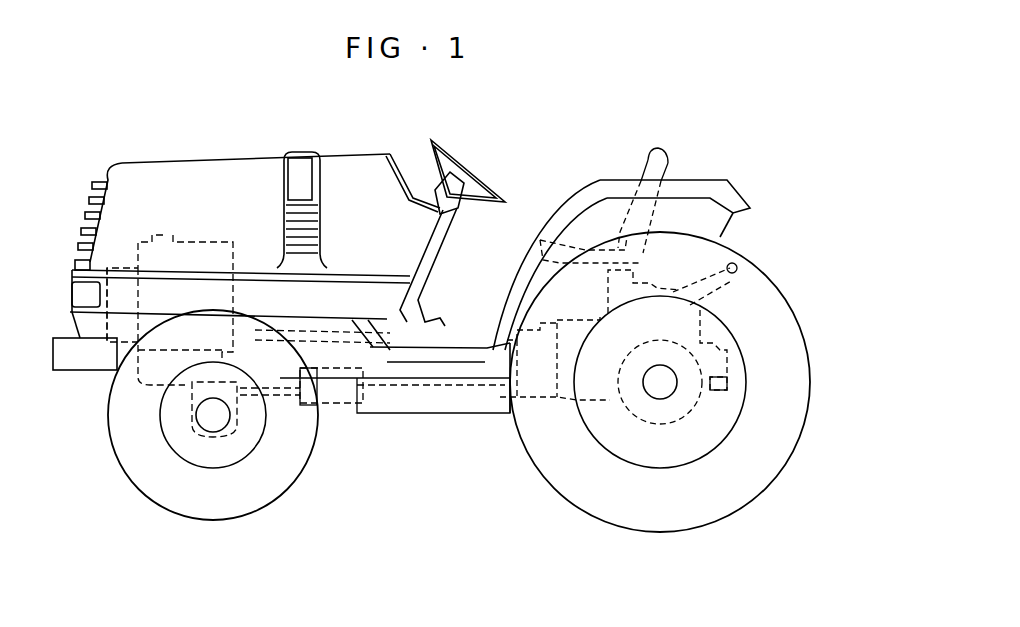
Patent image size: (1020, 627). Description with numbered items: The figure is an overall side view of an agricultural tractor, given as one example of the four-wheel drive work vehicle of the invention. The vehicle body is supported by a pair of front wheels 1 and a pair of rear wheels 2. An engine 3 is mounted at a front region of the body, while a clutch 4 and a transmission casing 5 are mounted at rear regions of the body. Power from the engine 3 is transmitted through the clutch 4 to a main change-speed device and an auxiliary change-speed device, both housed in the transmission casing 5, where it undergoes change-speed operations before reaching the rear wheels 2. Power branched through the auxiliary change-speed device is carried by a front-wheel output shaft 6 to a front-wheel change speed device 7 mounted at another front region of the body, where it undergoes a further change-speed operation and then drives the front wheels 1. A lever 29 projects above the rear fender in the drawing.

The front wheels 1 is at (147, 497).
The rear wheels 2 is at (577, 507).
The engine 3 is at (163, 235).
The clutch 4 is at (540, 400).
The transmission casing 5 is at (610, 397).
The front-wheel output shaft 6 is at (437, 387).
The front-wheel change speed device 7 is at (340, 403).
The speed change lever 29 is at (657, 153).